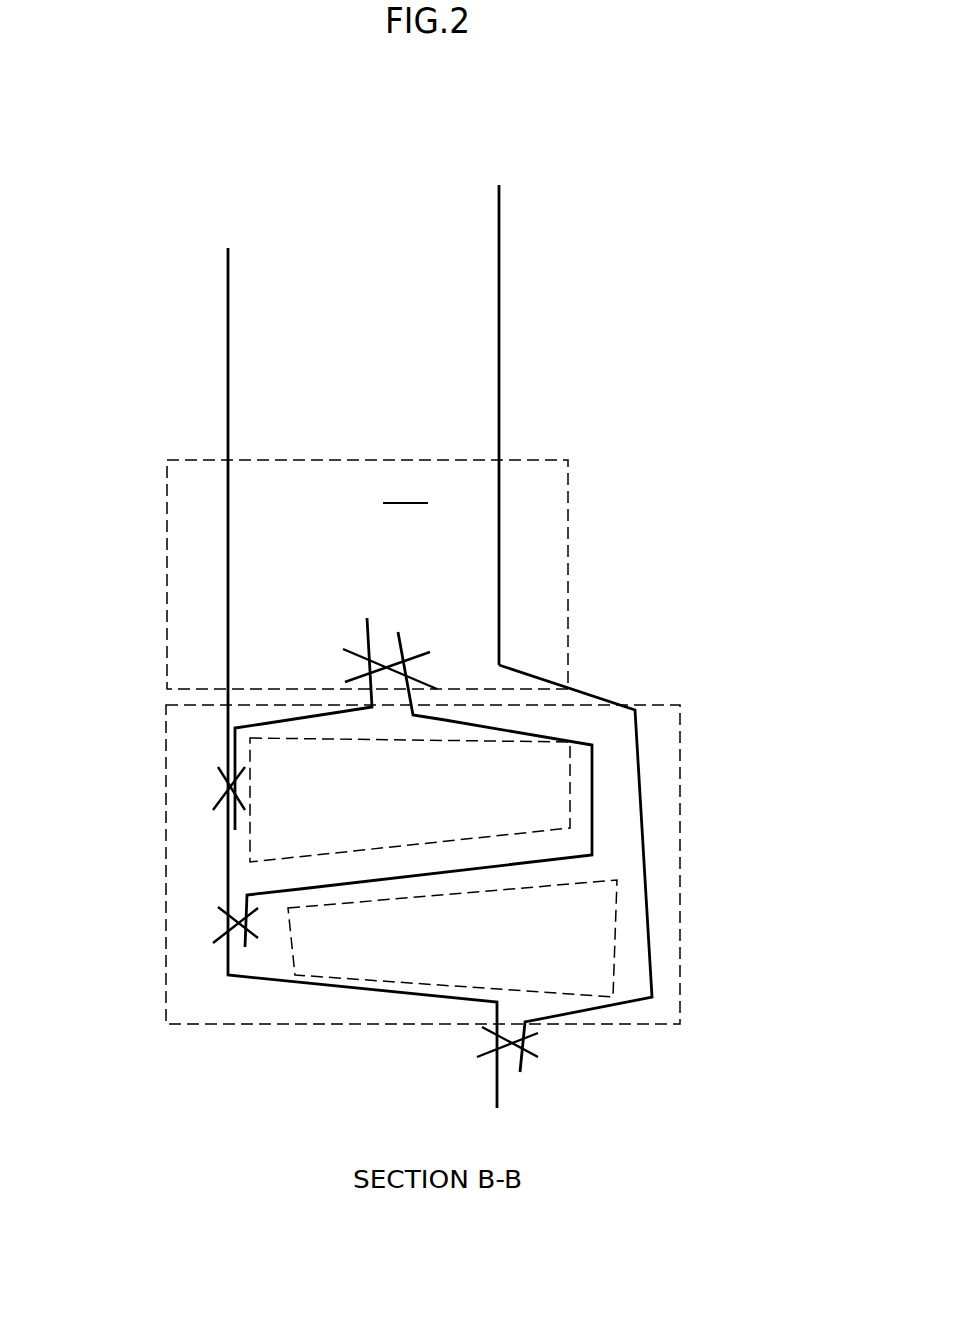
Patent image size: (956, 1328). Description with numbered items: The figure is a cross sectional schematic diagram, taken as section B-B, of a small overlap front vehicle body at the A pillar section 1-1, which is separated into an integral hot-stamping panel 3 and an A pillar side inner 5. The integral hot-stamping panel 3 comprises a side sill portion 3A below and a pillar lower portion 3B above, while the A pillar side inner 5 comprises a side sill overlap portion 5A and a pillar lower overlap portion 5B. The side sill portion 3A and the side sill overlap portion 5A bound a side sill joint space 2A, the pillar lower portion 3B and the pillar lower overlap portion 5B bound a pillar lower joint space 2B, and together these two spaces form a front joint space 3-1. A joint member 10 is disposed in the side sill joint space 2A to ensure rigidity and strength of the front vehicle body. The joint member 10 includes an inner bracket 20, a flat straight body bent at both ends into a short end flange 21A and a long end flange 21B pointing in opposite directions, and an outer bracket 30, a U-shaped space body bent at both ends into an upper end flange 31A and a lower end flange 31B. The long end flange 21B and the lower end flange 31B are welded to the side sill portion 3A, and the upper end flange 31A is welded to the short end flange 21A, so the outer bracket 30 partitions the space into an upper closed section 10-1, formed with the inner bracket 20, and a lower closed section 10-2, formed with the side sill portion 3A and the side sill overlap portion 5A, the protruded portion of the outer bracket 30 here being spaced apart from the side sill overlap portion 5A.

The A pillar section 1-1 is at (660, 628).
The side sill joint space 2A is at (243, 1023).
The pillar lower joint space 2B is at (383, 460).
The integral hot-stamping panel 3 is at (269, 678).
The side sill portion 3A is at (227, 863).
The pillar lower portion 3B is at (228, 585).
The front joint space 3-1 is at (405, 488).
The A pillar side inner 5 is at (660, 628).
The side sill overlap portion 5A is at (635, 868).
The pillar lower overlap portion 5B is at (499, 575).
The joint member 10 is at (413, 734).
The upper closed section 10-1 is at (571, 790).
The lower closed section 10-2 is at (617, 938).
The inner bracket 20 is at (327, 707).
The short end flange 21A is at (370, 683).
The long end flange 21B is at (237, 758).
The outer bracket 30 is at (418, 764).
The upper end flange 31A is at (412, 700).
The lower end flange 31B is at (247, 902).